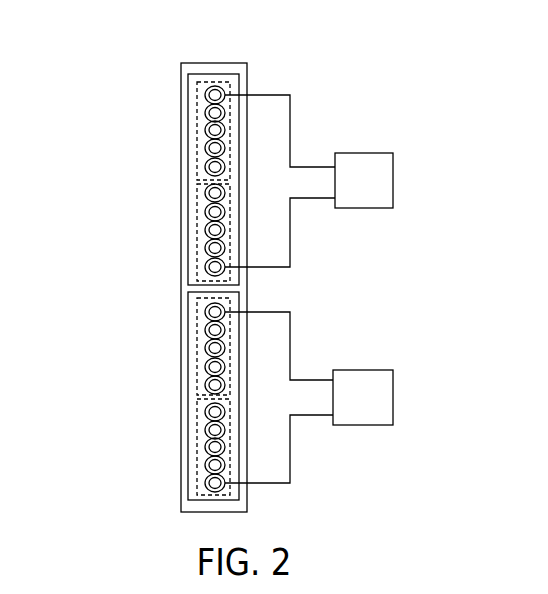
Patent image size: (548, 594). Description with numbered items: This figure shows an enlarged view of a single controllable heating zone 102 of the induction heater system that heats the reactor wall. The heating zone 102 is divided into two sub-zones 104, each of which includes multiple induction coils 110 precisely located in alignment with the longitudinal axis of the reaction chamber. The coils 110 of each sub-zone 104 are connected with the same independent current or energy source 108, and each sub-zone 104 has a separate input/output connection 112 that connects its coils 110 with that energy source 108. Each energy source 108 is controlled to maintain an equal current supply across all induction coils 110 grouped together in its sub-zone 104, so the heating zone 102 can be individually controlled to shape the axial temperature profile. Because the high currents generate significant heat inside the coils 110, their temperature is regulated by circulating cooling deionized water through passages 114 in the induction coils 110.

The heating zone 102 is at (341, 47).
The sub-zone 104 is at (218, 73).
The energy source 108 is at (363, 289).
The induction coil 110 is at (205, 95).
The input/output connection 112 is at (297, 162).
The passage 114 is at (205, 312).